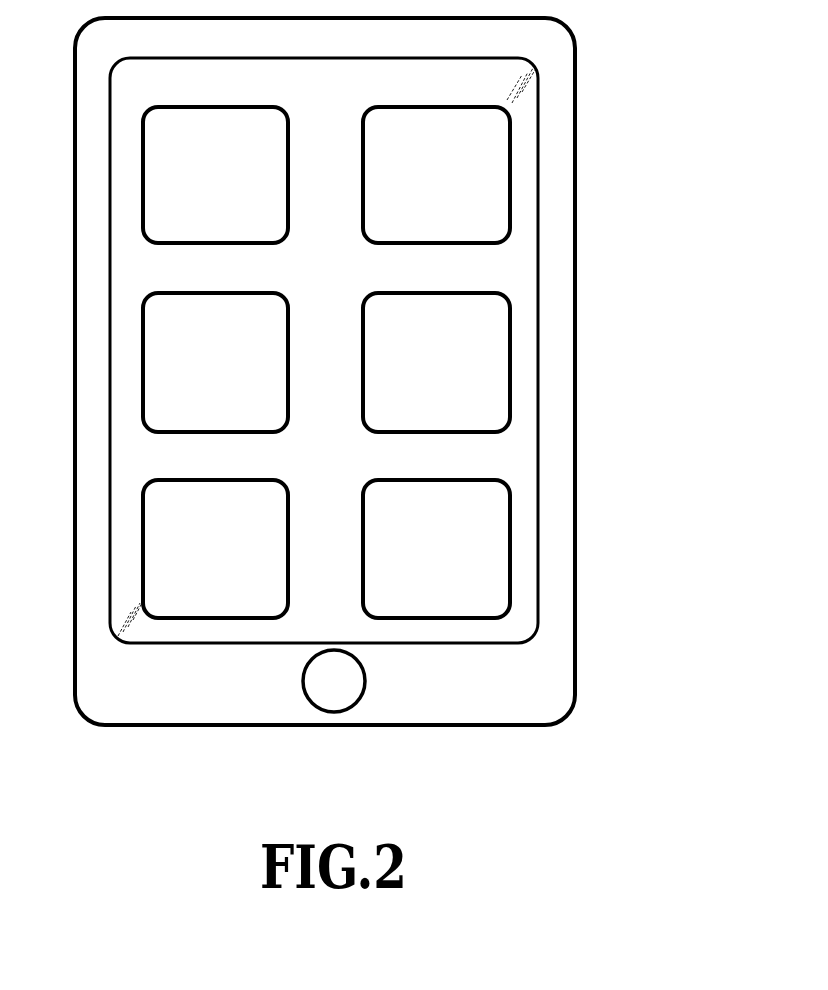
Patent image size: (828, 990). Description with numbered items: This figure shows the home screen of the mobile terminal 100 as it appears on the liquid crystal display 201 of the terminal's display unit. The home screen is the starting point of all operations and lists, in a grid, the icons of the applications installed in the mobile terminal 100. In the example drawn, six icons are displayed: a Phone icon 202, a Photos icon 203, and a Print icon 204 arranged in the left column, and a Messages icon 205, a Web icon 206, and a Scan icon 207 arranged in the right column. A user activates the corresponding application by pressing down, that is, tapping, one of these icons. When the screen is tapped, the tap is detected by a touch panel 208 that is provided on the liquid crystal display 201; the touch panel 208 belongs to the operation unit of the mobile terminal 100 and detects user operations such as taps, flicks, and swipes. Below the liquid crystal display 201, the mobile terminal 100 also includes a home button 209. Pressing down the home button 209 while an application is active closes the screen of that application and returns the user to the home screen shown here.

The mobile terminal 100 is at (573, 305).
The liquid crystal display 201 is at (530, 243).
The Phone icon 202 is at (212, 107).
The Photos icon 203 is at (212, 293).
The Print icon 204 is at (212, 480).
The Messages icon 205 is at (433, 107).
The Web icon 206 is at (433, 293).
The Scan icon 207 is at (435, 480).
The touch panel 208 is at (528, 577).
The home button 209 is at (347, 698).